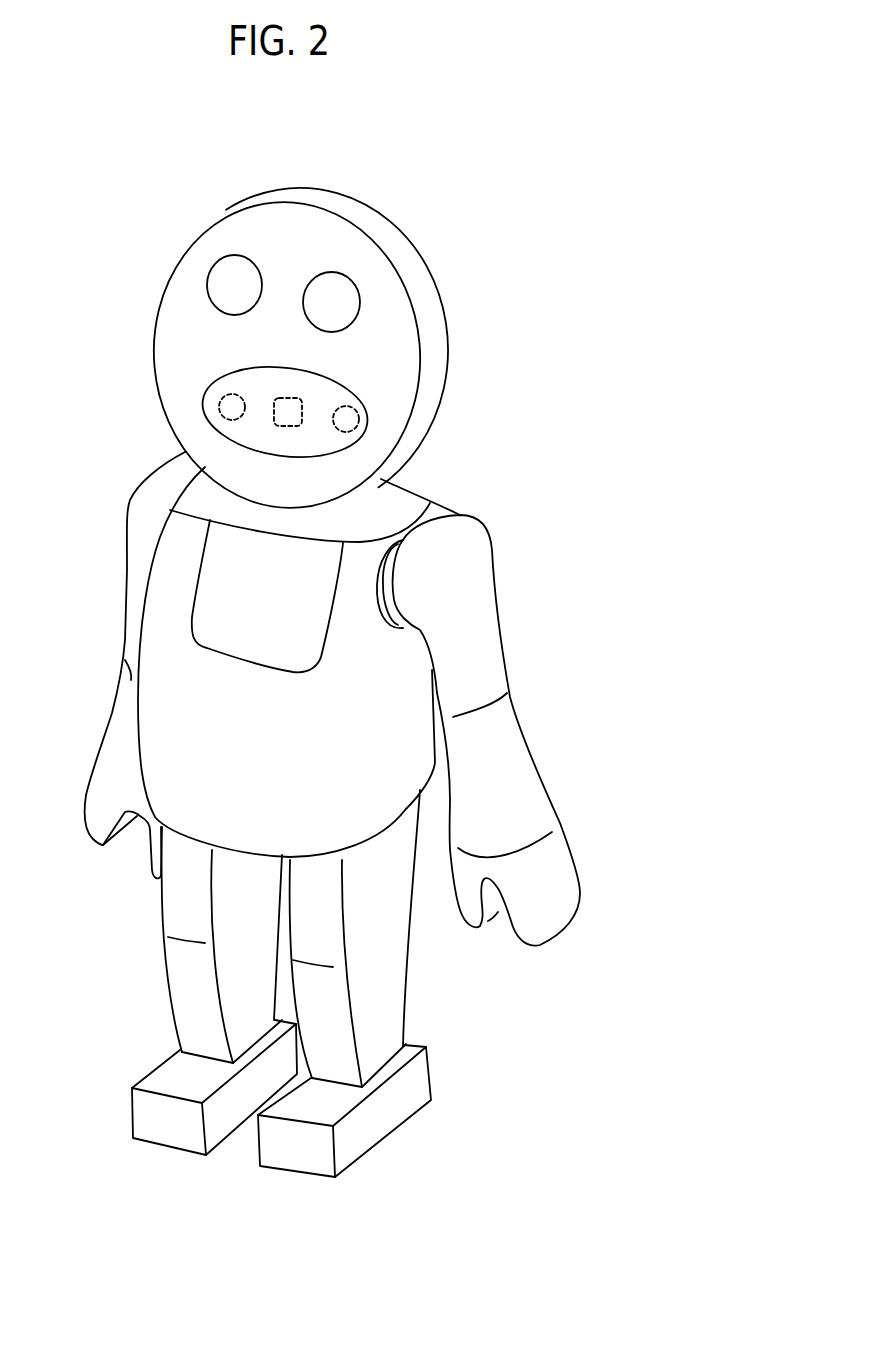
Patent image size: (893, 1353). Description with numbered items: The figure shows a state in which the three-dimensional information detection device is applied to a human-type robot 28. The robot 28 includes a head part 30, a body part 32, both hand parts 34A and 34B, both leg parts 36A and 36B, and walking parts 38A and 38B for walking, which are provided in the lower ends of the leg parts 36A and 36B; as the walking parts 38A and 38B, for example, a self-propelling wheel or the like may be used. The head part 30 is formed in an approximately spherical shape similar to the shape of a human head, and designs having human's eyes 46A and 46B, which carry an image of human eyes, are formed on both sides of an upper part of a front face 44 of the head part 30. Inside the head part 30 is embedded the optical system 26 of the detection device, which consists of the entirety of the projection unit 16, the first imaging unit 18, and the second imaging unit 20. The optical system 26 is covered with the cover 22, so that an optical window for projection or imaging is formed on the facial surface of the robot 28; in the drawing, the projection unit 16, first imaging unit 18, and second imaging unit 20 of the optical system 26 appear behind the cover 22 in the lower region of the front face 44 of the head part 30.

The human-type robot 28 is at (420, 168).
The head part 30 is at (453, 345).
The front face 44 is at (386, 421).
The eye 46A is at (222, 292).
The eye 46B is at (343, 300).
The cover 22 is at (224, 388).
The optical system 26 is at (90, 392).
The second imaging unit 20 is at (223, 408).
The projection unit 16 is at (283, 423).
The first imaging unit 18 is at (343, 427).
The body part 32 is at (218, 762).
The hand part 34A is at (133, 587).
The hand part 34B is at (487, 622).
The leg part 36A is at (180, 963).
The leg part 36B is at (382, 963).
The walking part 38A is at (163, 1130).
The walking part 38B is at (386, 1117).